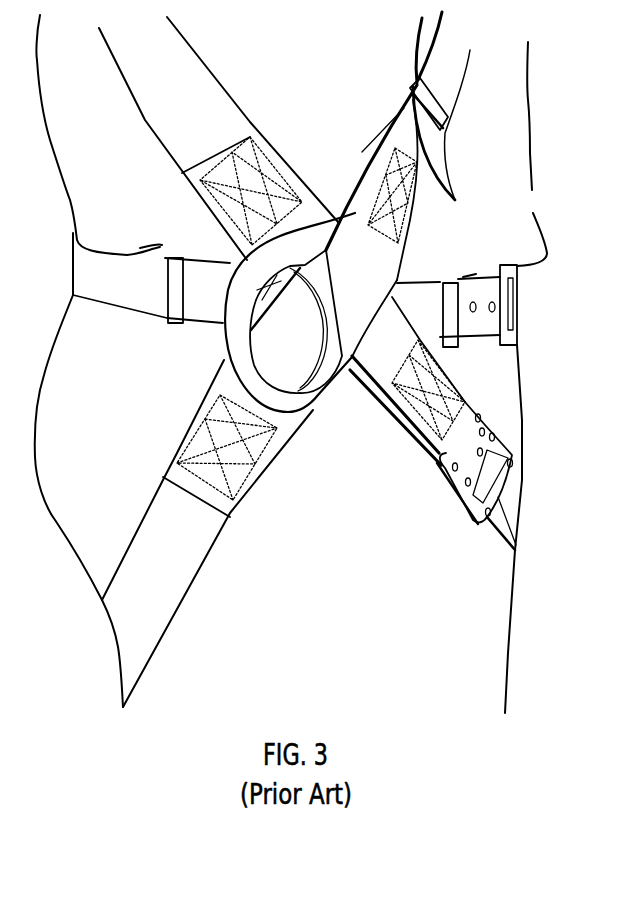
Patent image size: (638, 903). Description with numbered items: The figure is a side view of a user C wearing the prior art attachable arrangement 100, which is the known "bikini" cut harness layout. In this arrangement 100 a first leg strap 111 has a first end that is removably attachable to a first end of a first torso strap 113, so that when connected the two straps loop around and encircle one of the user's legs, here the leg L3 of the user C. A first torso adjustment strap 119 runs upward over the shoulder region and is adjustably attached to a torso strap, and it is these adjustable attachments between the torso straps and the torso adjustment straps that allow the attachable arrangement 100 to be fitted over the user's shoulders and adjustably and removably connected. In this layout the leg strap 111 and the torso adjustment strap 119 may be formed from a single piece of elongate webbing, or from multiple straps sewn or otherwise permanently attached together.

The attachable arrangement 100 is at (467, 250).
The first leg strap 111 is at (188, 547).
The first torso strap 113 is at (182, 173).
The first torso adjustment strap 119 is at (442, 67).
The climber C is at (505, 183).
The leg L3 is at (467, 583).